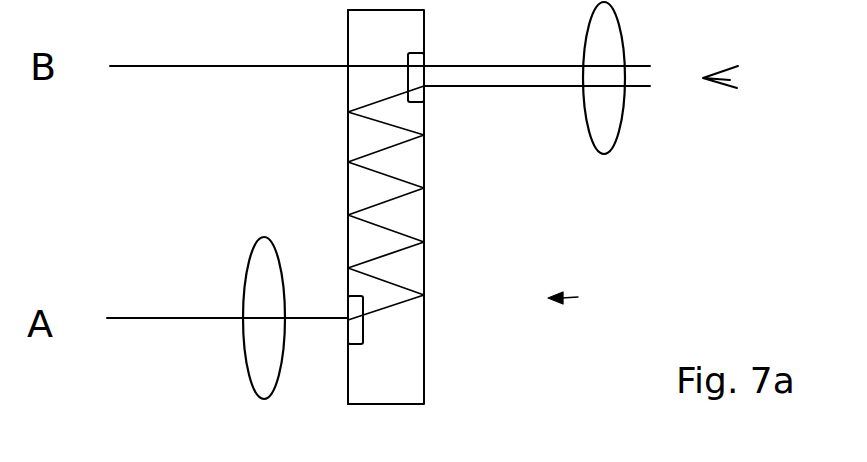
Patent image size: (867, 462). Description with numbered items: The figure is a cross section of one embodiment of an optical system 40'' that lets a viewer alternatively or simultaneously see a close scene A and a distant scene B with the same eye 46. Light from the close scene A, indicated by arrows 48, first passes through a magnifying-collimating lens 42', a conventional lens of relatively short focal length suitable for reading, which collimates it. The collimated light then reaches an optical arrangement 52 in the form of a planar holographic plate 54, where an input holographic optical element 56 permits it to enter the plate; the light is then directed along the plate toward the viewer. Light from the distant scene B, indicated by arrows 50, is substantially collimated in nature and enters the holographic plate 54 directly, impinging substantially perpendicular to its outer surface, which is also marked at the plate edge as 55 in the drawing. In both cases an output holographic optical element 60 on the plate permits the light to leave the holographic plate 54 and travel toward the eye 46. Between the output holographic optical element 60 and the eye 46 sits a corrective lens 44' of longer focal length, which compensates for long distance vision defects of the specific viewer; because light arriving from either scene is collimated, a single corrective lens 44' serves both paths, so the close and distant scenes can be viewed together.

The optical system 40'' is at (598, 324).
The magnifying-collimating lens 42' is at (230, 329).
The corrective lens 44' is at (629, 95).
The eye 46 is at (732, 93).
The arrows 48 is at (112, 378).
The arrows 50 is at (131, 67).
The optical arrangement 52 is at (453, 223).
The holographic plate 54 is at (408, 377).
The reflective surface 55 is at (348, 50).
The input holographic optical element 56 is at (350, 333).
The output holographic optical element 60 is at (416, 60).